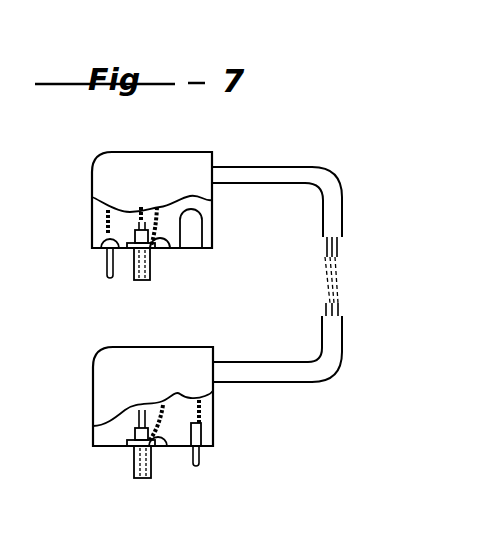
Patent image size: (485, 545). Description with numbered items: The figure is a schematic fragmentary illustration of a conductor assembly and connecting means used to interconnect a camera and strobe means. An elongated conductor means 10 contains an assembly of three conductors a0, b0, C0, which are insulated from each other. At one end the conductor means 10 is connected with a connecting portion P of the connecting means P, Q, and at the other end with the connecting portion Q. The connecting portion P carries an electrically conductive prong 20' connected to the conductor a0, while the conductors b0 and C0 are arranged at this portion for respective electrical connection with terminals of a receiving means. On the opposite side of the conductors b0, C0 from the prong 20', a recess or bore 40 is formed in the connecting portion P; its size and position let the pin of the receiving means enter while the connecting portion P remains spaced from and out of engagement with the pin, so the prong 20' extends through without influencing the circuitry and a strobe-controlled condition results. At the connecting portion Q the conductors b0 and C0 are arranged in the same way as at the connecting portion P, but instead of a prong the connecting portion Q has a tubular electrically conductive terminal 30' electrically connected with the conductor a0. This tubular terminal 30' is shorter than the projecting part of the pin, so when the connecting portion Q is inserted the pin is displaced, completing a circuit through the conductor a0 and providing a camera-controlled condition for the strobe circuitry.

The connecting portion P is at (170, 168).
The connecting portion Q is at (108, 381).
The conductor means 10 is at (326, 174).
The recess or bore 40 is at (197, 232).
The electrically conductive prong 20' is at (90, 294).
The tubular electrically conductive terminal 30' is at (234, 433).
The conductor a0 is at (97, 243).
The conductor b0 is at (162, 245).
The conductor C0 is at (140, 280).